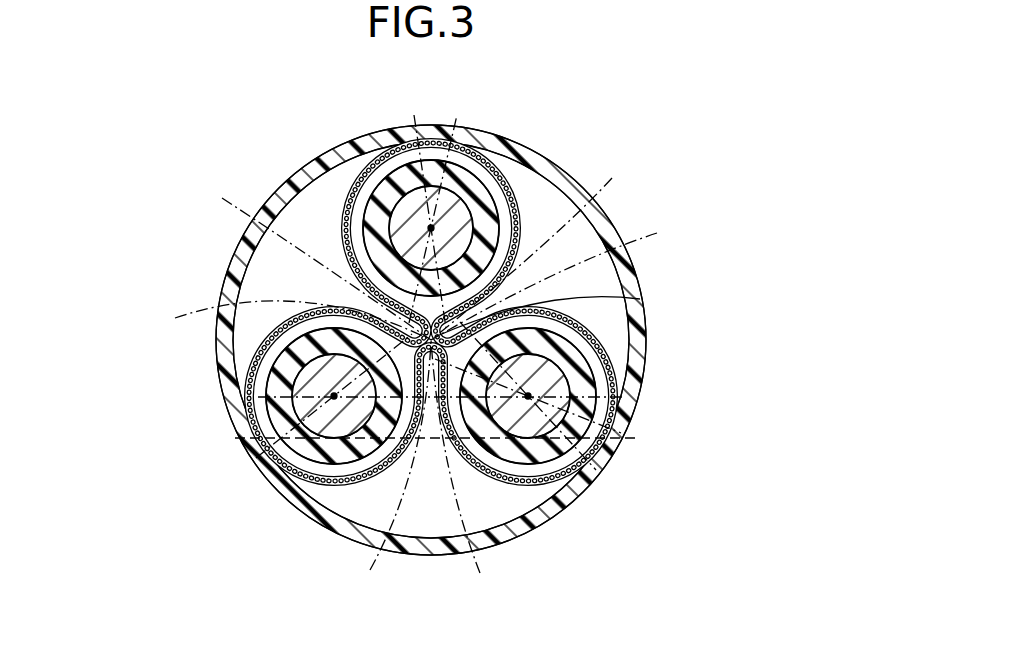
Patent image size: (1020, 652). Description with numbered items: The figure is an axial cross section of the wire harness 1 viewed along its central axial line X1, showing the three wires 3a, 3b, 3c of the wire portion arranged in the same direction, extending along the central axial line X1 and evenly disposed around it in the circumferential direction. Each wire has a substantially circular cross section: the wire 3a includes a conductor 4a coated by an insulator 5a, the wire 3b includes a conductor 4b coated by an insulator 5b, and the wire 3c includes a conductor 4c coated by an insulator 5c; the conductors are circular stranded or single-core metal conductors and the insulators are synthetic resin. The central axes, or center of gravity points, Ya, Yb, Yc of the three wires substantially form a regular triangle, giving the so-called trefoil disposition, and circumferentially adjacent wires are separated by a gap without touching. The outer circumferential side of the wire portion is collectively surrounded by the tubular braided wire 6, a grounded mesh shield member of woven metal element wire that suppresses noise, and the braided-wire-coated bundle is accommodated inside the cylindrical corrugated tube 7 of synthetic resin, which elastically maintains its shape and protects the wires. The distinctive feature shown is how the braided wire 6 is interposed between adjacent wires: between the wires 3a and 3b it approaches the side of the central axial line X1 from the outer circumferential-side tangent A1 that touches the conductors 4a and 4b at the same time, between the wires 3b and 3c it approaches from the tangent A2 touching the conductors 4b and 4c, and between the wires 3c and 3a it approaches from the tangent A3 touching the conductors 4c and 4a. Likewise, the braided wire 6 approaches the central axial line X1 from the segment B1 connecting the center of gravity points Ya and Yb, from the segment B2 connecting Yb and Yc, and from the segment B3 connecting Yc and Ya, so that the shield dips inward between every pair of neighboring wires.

The wire harness 1 is at (146, 140).
The wire 3a is at (367, 82).
The conductor 4a is at (417, 213).
The insulator 5a is at (380, 197).
The wire 3b is at (153, 357).
The conductor 4b is at (300, 402).
The insulator 5b is at (295, 360).
The wire 3c is at (683, 487).
The conductor 4c is at (552, 420).
The insulator 5c is at (580, 432).
The braided wire 6 is at (337, 483).
The corrugated tube 7 is at (649, 360).
The central axis (center of gravity point) Ya is at (463, 150).
The central axis (center of gravity point) Yb is at (280, 465).
The central axis (center of gravity point) Yc is at (563, 380).
The central axial line X1 is at (640, 299).
The outer circumferential-side tangent A1 is at (317, 257).
The outer circumferential-side tangent A2 is at (393, 472).
The outer circumferential-side tangent A3 is at (551, 275).
The segment B1 is at (288, 320).
The segment B2 is at (462, 472).
The segment B3 is at (527, 247).